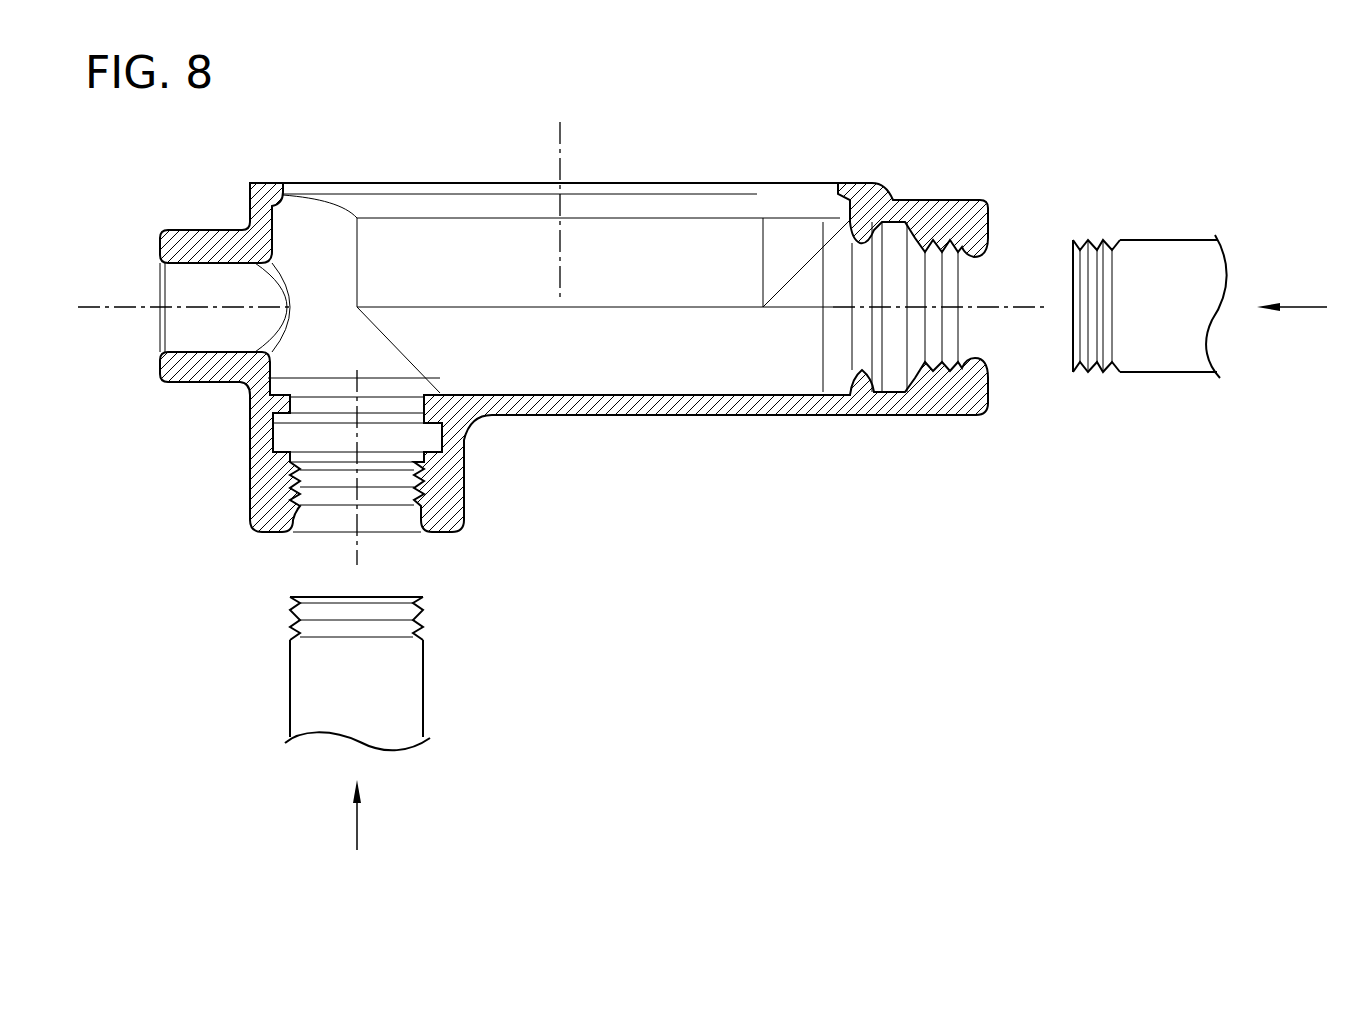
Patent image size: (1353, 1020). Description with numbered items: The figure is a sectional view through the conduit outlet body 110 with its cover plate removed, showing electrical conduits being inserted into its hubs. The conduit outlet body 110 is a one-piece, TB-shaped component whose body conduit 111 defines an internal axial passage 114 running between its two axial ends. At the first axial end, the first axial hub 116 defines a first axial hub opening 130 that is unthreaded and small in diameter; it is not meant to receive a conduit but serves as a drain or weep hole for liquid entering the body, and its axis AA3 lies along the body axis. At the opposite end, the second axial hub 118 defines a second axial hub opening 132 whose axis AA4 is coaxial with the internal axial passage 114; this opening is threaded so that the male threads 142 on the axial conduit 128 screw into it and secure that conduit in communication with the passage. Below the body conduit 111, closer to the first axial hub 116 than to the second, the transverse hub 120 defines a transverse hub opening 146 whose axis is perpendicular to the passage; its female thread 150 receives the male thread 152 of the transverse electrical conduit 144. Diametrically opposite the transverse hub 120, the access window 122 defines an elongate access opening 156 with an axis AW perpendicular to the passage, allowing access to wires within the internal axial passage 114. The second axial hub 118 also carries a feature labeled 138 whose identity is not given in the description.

The conduit outlet body 110 is at (810, 88).
The body conduit 111 is at (568, 415).
The internal axial passage 114 is at (622, 335).
The first axial hub 116 is at (165, 232).
The second axial hub 118 is at (990, 397).
The transverse hub 120 is at (458, 534).
The access window 122 is at (279, 183).
The axial conduit 128 is at (1168, 374).
The first axial hub opening 130 is at (197, 326).
The second axial hub opening 132 is at (936, 297).
The sealing lip 138 is at (975, 257).
The male threads 142 is at (1100, 250).
The transverse electrical conduit 144 is at (426, 698).
The transverse hub opening 146 is at (397, 494).
The female thread 150 is at (293, 493).
The male thread 152 is at (295, 628).
The access opening 156 is at (492, 189).
The axis of access opening AW is at (565, 140).
The axis of first axial hub opening AA3 is at (90, 306).
The axis of second axial hub opening AA4 is at (842, 304).